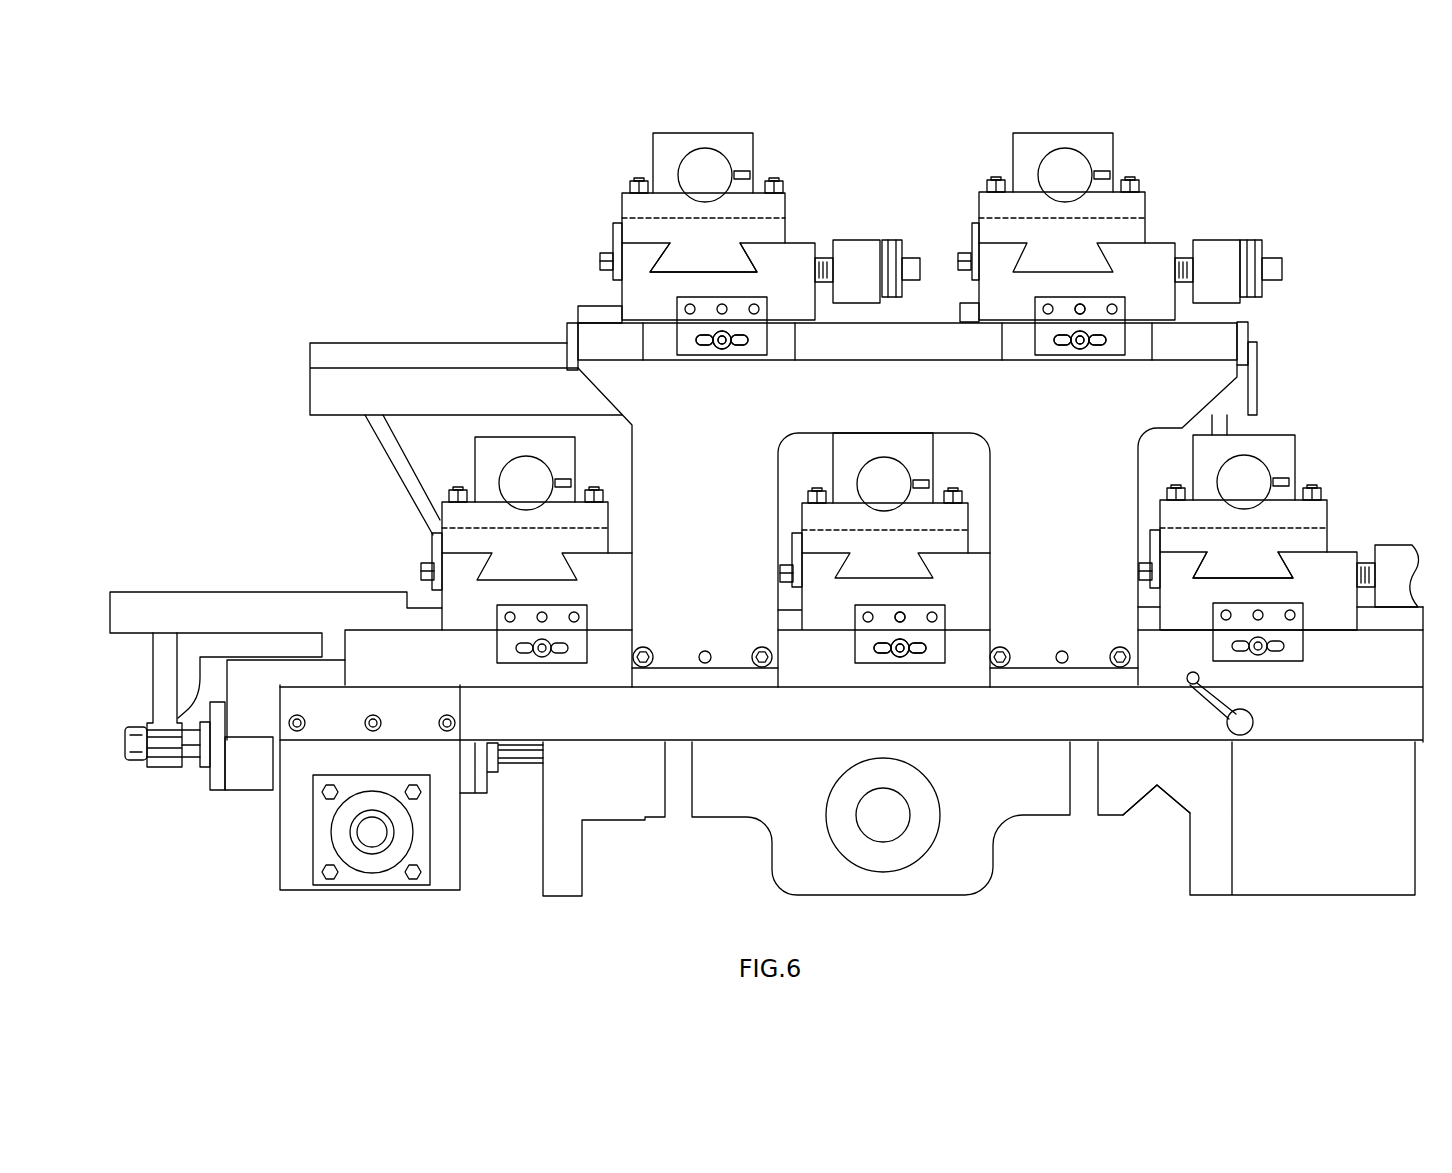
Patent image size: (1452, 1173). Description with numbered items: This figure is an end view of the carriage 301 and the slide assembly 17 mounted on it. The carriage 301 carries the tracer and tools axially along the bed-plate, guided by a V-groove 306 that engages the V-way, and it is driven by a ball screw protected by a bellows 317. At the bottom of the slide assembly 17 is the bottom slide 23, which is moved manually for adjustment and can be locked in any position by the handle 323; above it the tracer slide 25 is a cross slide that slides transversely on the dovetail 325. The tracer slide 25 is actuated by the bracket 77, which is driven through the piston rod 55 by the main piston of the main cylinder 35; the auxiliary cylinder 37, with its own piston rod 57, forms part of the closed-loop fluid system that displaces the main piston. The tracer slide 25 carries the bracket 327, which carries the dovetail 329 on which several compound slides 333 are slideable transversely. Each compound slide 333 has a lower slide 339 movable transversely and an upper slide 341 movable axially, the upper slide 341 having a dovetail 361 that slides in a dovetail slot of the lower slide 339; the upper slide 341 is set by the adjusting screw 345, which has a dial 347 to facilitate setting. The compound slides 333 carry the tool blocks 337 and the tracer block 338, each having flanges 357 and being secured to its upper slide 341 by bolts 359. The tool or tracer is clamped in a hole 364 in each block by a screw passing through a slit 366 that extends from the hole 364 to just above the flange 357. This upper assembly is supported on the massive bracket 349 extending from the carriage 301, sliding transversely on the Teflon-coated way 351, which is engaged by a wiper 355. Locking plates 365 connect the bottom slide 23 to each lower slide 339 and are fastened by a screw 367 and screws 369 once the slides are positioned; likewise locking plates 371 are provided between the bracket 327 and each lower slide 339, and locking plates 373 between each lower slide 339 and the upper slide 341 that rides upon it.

The slide assembly 17 is at (1290, 416).
The bottom slide 23 is at (540, 735).
The tracer slide 25 is at (375, 640).
The main cylinder 35 is at (250, 790).
The auxiliary cylinder 37 is at (405, 882).
The piston rod 55 is at (195, 767).
The piston rod 57 is at (372, 840).
The bracket 77 is at (205, 608).
The carriage 301 is at (990, 860).
The V-groove 306 is at (1170, 808).
The bellows 317 is at (895, 858).
The handle 323 is at (1218, 705).
The dovetail 325 is at (292, 677).
The bracket 327 is at (645, 455).
The dovetail 329 is at (420, 620).
The compound slide 333 is at (1155, 234).
The tool block 337 is at (1018, 160).
The tracer block 338 is at (655, 158).
The lower slide 339 is at (625, 300).
The upper slide 341 is at (765, 225).
The adjusting screw 345 is at (908, 252).
The dial 347 is at (890, 243).
The bracket 349 is at (400, 478).
The way 351 is at (390, 350).
The wiper 355 is at (570, 335).
The flange 357 is at (620, 210).
The bolt 359 is at (625, 188).
The dovetail 361 is at (708, 268).
The hole 364 is at (703, 162).
The locking plate 365 is at (870, 650).
The slit 366 is at (748, 172).
The screw 367 is at (603, 263).
The screw 369 is at (1078, 305).
The locking plate 371 is at (1048, 348).
The locking plate 373 is at (613, 240).